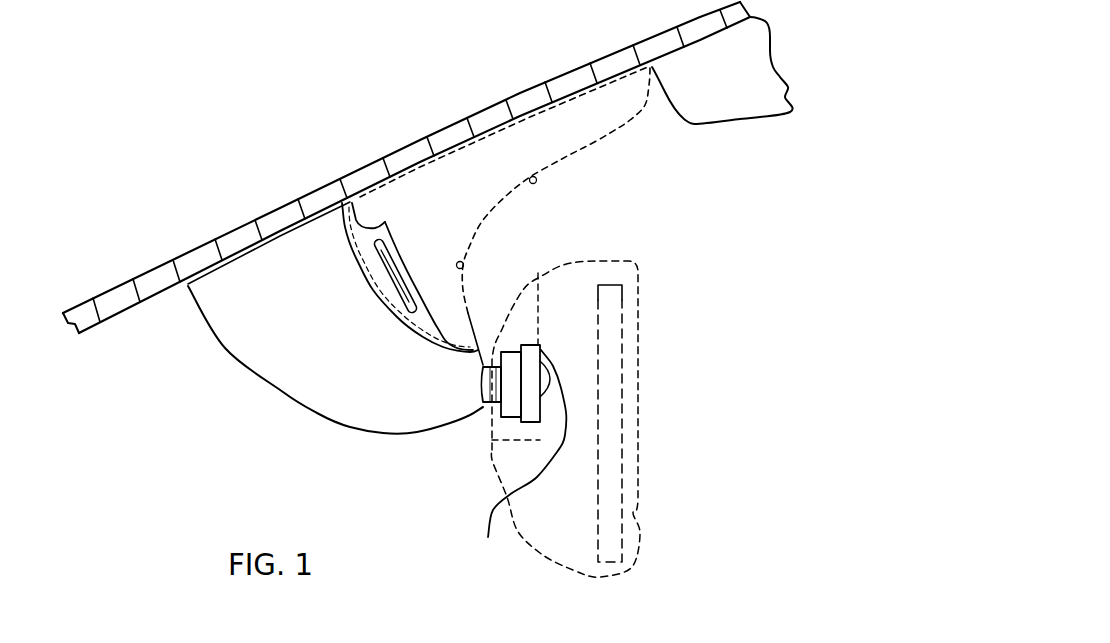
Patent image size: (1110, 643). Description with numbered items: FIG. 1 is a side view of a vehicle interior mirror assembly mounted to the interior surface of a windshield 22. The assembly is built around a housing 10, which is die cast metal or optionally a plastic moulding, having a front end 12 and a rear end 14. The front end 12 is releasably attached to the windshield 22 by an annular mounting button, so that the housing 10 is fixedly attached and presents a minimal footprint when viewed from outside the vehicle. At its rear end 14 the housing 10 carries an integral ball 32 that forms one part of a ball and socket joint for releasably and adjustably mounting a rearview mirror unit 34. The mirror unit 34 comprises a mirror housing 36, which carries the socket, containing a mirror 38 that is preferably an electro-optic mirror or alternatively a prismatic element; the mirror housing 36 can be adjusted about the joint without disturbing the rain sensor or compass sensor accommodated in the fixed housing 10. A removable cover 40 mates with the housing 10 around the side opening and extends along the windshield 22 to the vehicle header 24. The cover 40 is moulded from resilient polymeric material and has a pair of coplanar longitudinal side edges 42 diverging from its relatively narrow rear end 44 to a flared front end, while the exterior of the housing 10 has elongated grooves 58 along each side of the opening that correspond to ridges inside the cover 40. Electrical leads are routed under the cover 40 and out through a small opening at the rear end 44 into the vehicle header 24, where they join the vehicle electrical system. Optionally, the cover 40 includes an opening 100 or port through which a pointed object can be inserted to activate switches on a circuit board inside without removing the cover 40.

The housing 10 is at (280, 378).
The front end 12 is at (188, 293).
The rear end 14 is at (462, 422).
The windshield 22 is at (245, 230).
The vehicle header 24 is at (746, 117).
The ball 32 is at (517, 466).
The rearview mirror unit 34 is at (661, 459).
The mirror housing 36 is at (532, 357).
The mirror 38 is at (610, 365).
The removable cover 40 is at (583, 150).
The longitudinal side edges 42 is at (492, 137).
The rear end of the cover 44 is at (647, 105).
The elongated grooves 58 is at (388, 257).
The opening 100 is at (537, 183).